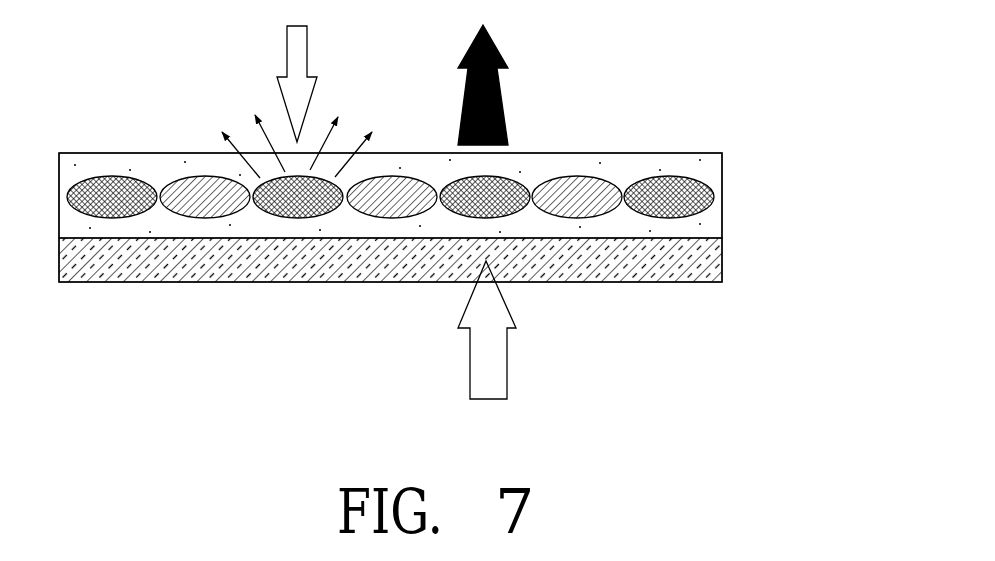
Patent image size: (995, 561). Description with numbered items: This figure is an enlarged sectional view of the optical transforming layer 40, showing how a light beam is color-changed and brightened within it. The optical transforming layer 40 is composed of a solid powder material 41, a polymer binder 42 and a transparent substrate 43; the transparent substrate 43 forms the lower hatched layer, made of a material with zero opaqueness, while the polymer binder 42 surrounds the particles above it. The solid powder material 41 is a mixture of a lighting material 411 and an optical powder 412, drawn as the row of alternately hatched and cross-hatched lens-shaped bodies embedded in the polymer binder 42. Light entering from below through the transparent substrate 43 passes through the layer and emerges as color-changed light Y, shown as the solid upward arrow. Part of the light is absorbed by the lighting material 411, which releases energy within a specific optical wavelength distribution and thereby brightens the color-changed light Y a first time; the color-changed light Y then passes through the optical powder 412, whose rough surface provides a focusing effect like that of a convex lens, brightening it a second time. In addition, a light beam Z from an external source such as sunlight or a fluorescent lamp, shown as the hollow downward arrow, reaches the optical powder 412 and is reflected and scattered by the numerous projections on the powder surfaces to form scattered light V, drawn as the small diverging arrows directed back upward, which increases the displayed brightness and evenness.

The optical transforming layer 40 is at (737, 215).
The solid powder material 41 is at (436, 124).
The lighting material 411 is at (585, 177).
The optical powder 412 is at (695, 177).
The polymer binder 42 is at (543, 160).
The transparent substrate 43 is at (722, 262).
The light beam of external light source Z is at (302, 60).
The color-changed light Y is at (505, 110).
The scattered light V is at (273, 145).